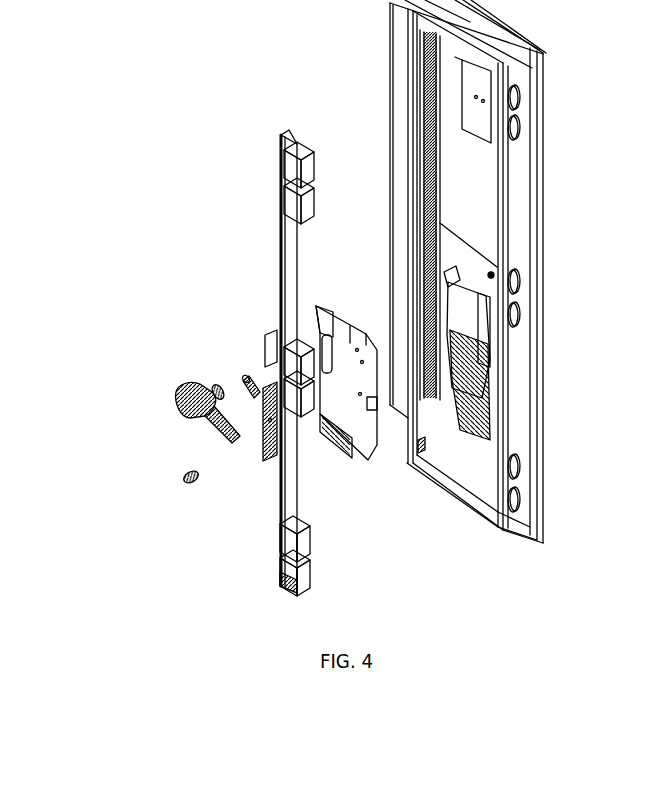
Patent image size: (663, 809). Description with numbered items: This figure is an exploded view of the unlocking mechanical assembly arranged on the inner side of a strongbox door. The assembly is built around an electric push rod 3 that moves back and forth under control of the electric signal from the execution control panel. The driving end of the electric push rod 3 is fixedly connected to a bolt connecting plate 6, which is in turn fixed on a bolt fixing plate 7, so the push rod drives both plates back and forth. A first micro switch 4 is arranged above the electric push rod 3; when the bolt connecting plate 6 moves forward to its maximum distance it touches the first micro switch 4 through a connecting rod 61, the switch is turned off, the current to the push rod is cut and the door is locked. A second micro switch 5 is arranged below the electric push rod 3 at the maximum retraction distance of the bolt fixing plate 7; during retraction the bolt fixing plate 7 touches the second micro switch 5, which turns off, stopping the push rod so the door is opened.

The electric push rod 3 is at (167, 422).
The first micro switch 4 is at (182, 388).
The second micro switch 5 is at (177, 480).
The bolt connecting plate 6 is at (247, 437).
The connecting rod 61 is at (235, 390).
The bolt fixing plate 7 is at (265, 245).